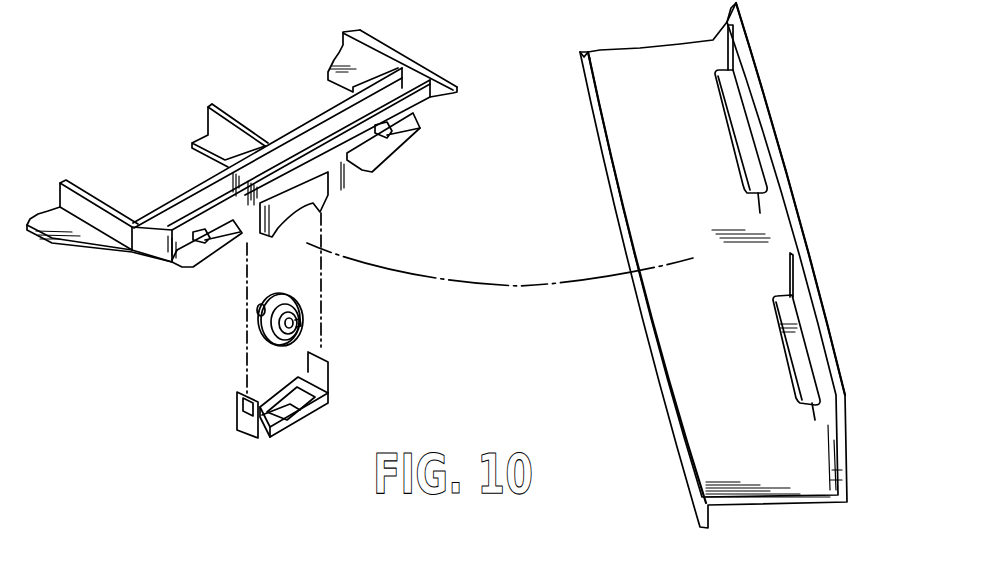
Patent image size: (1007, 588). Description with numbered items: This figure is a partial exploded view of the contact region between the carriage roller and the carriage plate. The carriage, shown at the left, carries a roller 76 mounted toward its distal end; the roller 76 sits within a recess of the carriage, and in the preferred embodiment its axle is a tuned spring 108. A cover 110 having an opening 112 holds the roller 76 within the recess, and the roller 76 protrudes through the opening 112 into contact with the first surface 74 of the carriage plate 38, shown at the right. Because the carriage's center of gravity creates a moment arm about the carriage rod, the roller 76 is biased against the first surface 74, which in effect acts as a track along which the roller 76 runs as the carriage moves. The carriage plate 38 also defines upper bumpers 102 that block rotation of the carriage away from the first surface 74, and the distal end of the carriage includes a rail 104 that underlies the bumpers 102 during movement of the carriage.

The rail 104 is at (215, 250).
The tuned spring 108 is at (257, 310).
The roller 76 is at (300, 297).
The cover 110 is at (322, 407).
The opening 112 is at (277, 410).
The carriage plate 38 is at (797, 210).
The first surface 74 is at (683, 393).
The upper bumpers 102 is at (728, 135).